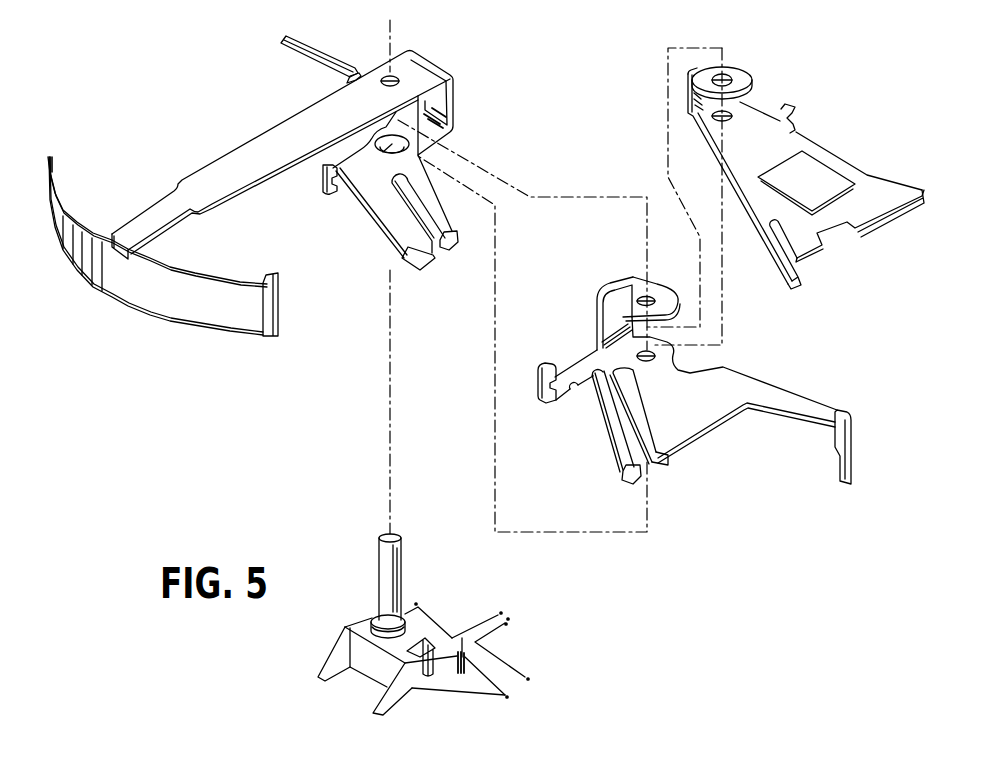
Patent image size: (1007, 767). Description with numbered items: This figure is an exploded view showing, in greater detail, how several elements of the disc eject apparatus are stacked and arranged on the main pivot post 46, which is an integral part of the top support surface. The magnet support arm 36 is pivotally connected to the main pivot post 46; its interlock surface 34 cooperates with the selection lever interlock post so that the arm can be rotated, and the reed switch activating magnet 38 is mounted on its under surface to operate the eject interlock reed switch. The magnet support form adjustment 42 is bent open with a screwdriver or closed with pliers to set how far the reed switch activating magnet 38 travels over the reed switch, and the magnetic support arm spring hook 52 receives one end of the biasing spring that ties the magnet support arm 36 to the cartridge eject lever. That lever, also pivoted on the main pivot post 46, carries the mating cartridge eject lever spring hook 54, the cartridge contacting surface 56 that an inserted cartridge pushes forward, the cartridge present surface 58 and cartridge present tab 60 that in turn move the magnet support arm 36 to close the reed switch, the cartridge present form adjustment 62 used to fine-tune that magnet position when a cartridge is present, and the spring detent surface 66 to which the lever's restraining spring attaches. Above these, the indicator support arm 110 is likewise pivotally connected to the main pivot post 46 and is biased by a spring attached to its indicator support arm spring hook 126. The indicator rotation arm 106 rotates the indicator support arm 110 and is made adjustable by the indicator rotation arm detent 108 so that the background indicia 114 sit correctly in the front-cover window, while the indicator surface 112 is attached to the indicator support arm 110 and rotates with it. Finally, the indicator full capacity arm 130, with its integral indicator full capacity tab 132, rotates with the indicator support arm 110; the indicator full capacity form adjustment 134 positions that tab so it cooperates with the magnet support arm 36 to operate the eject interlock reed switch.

The interlock surface 34 is at (785, 276).
The magnet support arm 36 is at (875, 174).
The reed switch activating magnet 38 is at (889, 226).
The magnet support form adjustment 42 is at (816, 252).
The main pivot post 46 is at (402, 568).
The magnetic support arm spring hook 52 is at (797, 109).
The cartridge eject lever spring hook 54 is at (547, 363).
The cartridge contacting surface 56 is at (854, 433).
The cartridge present surface 58 is at (616, 451).
The cartridge present tab 60 is at (626, 483).
The cartridge present form adjustment 62 is at (668, 464).
The spring detent surface 66 is at (586, 386).
The indicator rotation arm 106 is at (284, 40).
The indicator rotation arm detent 108 is at (350, 84).
The indicator support arm 110 is at (236, 152).
The indicator surface 112 is at (268, 273).
The background indicia 114 is at (168, 290).
The indicator support arm spring hook 126 is at (321, 186).
The indicator full capacity arm 130 is at (434, 224).
The indicator full capacity tab 132 is at (451, 250).
The indicator full capacity form adjustment 134 is at (425, 272).